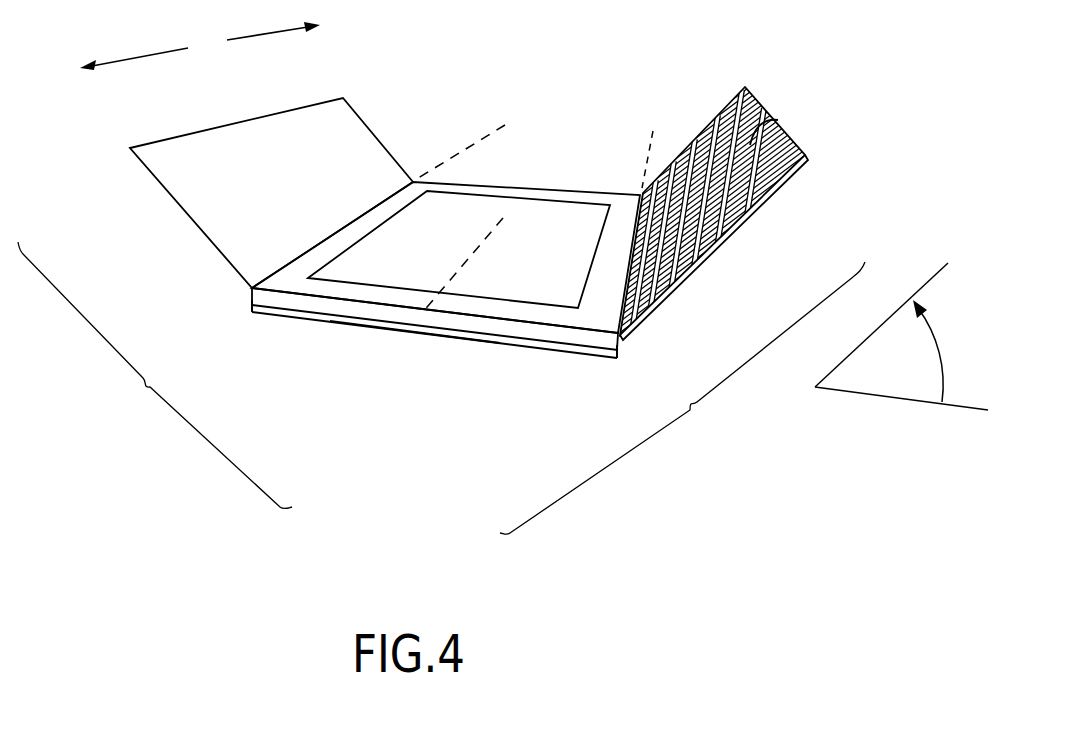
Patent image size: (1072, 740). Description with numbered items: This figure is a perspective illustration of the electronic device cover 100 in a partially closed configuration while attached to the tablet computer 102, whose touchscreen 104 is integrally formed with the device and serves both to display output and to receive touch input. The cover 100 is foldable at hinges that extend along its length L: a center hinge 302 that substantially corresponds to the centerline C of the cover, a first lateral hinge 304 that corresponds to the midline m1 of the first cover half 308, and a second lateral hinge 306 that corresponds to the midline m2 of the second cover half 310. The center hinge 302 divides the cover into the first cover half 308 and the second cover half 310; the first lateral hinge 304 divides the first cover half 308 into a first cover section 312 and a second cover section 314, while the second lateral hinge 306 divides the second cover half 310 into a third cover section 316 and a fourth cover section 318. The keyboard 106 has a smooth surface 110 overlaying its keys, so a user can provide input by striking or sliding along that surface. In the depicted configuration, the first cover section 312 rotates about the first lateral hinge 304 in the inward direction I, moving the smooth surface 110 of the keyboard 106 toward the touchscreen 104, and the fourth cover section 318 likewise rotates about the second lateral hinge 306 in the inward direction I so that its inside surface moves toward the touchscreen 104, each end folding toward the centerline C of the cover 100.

The electronic device cover 100 is at (333, 105).
The tablet computer 102 is at (618, 197).
The touchscreen 104 is at (443, 198).
The keyboard 106 is at (717, 113).
The smooth surface 110 is at (757, 137).
The center hinge 302 is at (411, 358).
The first lateral hinge 304 is at (631, 360).
The second lateral hinge 306 is at (236, 318).
The first cover half 308 is at (682, 398).
The second cover half 310 is at (155, 375).
The first cover section 312 is at (708, 248).
The second cover section 314 is at (505, 345).
The third cover section 316 is at (330, 322).
The fourth cover section 318 is at (192, 213).
The midline of the first cover half m1 is at (656, 145).
The midline of the second cover half m2 is at (470, 137).
The centerline C is at (503, 218).
The length L is at (200, 46).
The inward direction I is at (938, 350).